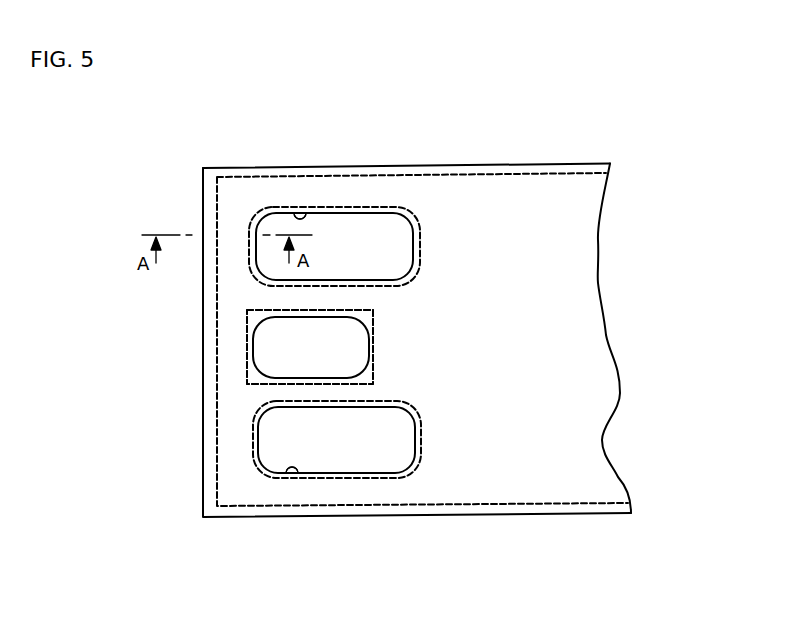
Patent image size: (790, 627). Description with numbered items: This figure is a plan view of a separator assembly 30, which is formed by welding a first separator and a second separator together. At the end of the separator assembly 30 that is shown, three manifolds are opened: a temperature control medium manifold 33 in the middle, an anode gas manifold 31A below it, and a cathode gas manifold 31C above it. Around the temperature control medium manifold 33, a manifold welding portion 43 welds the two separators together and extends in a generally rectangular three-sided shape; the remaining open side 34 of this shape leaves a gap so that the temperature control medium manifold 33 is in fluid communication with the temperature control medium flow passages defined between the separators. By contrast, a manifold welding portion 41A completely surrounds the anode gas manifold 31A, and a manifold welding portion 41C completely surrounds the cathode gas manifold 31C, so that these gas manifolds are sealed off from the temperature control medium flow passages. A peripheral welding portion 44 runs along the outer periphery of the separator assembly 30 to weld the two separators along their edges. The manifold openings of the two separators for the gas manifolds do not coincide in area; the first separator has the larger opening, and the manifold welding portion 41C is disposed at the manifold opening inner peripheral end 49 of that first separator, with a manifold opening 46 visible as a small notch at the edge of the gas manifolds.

The separator assembly 30 is at (188, 168).
The anode gas manifold 31A is at (398, 443).
The cathode gas manifold 31C is at (393, 250).
The temperature control medium manifold 33 is at (352, 353).
The open side 34 is at (372, 320).
The manifold welding portion 41A is at (347, 478).
The manifold welding portion 41C is at (350, 207).
The manifold welding portion 43 is at (247, 347).
The peripheral welding portion 44 is at (218, 423).
The manifold opening 46 is at (304, 212).
The manifold opening inner peripheral end 49 is at (338, 345).